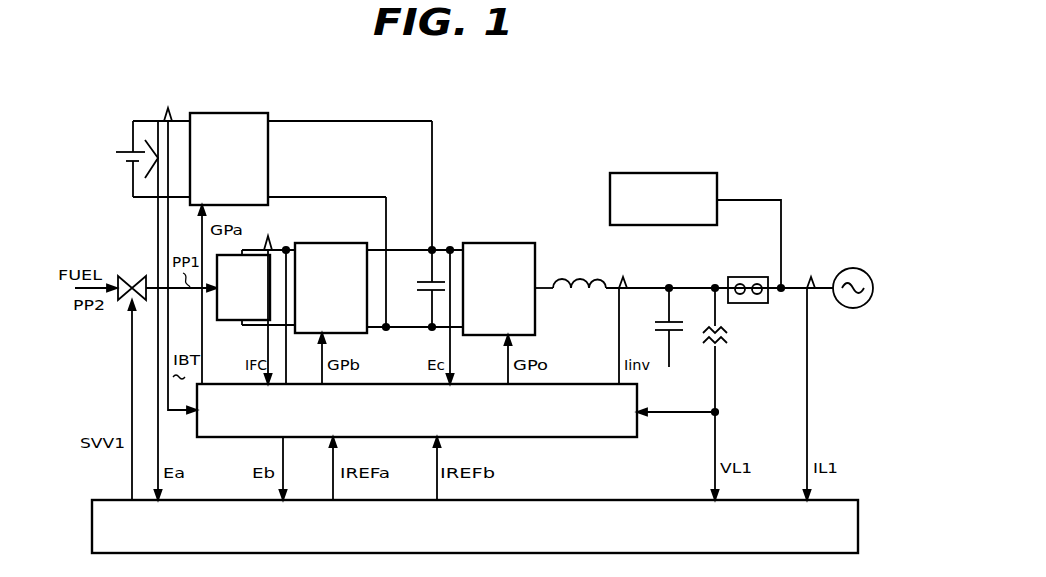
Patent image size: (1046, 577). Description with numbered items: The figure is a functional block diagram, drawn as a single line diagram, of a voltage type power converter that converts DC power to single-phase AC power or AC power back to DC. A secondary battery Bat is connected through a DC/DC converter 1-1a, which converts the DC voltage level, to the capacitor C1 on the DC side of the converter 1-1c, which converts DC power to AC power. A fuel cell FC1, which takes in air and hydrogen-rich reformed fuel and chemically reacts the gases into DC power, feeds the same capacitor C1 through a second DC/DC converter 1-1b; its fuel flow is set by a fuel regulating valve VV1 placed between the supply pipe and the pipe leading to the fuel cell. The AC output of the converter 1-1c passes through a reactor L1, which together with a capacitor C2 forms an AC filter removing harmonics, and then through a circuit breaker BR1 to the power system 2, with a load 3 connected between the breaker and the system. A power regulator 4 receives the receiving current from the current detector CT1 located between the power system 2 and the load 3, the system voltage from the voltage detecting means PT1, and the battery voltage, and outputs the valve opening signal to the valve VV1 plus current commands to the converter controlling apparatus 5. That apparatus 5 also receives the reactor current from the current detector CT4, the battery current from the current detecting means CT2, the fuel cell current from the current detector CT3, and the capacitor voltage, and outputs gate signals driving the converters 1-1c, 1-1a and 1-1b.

The DC/DC converter 1-1a is at (232, 113).
The DC/DC converter 1-1b is at (322, 243).
The converter 1-1c is at (485, 243).
The power system 2 is at (873, 288).
The load 3 is at (677, 173).
The power regulator 4 is at (858, 513).
The converter controlling apparatus 5 is at (590, 438).
The secondary battery Bat is at (112, 149).
The current detector CT1 is at (815, 379).
The current detecting means CT2 is at (177, 251).
The current detector CT3 is at (280, 303).
The current detector CT4 is at (634, 319).
The capacitor C1 is at (425, 225).
The capacitor C2 is at (662, 327).
The reactor L1 is at (579, 271).
The circuit breaker BR1 is at (748, 281).
The voltage detecting means PT1 is at (734, 394).
The fuel regulating valve VV1 is at (131, 278).
The fuel cell FC1 is at (228, 321).